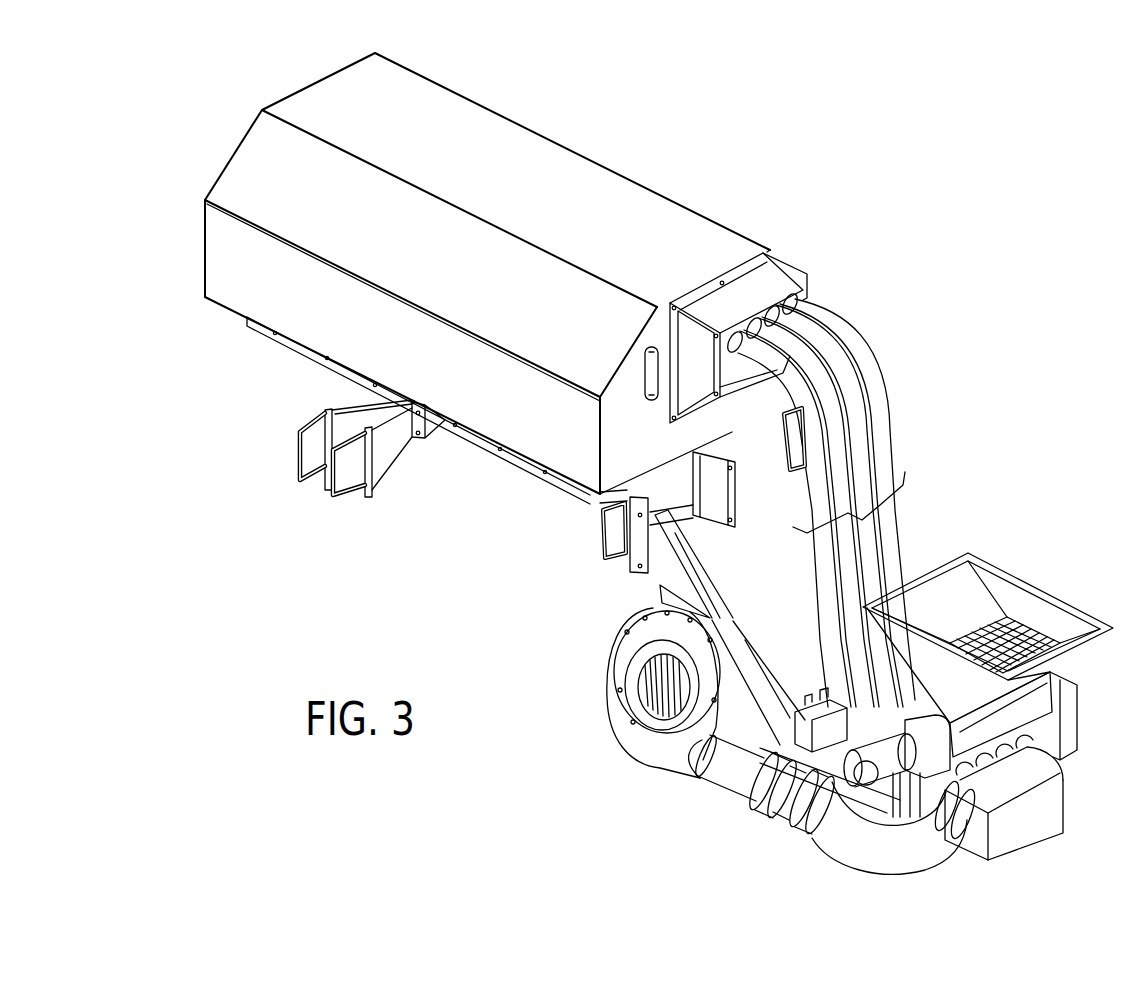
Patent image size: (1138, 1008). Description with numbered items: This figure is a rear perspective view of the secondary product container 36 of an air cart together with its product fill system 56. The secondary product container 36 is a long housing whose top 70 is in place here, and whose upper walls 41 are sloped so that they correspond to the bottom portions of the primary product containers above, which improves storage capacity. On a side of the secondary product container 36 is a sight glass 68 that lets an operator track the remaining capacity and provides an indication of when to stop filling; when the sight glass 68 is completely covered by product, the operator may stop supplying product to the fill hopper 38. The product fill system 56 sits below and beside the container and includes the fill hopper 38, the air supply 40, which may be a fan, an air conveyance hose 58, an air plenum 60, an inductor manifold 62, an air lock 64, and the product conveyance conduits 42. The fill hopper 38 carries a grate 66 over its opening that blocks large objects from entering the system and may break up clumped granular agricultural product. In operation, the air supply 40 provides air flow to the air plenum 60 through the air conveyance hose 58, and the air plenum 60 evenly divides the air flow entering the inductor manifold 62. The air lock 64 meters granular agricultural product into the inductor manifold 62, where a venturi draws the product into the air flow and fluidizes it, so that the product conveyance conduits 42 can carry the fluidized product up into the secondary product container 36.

The top 70 is at (578, 178).
The upper walls 41 is at (620, 317).
The secondary product container 36 is at (785, 270).
The sight glass 68 is at (652, 378).
The product fill system 56 is at (996, 407).
The product conveyance conduits 42 is at (862, 520).
The fill hopper 38 is at (1020, 602).
The grate 66 is at (1045, 625).
The air supply 40 is at (640, 672).
The air lock 64 is at (847, 733).
The air conveyance hose 58 is at (790, 805).
The inductor manifold 62 is at (1017, 747).
The air plenum 60 is at (1027, 840).